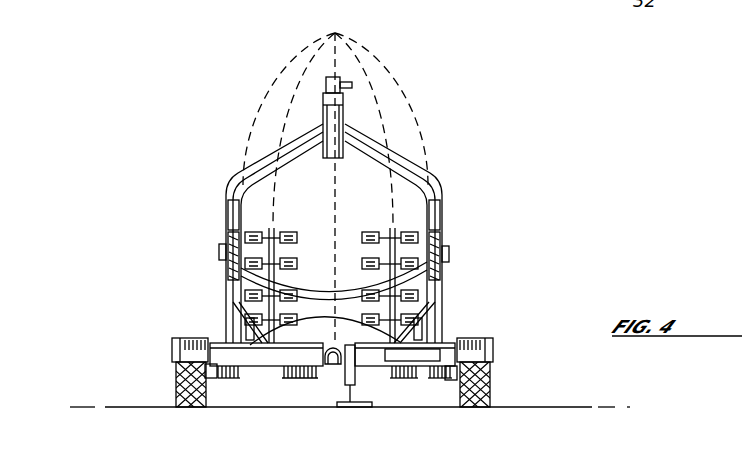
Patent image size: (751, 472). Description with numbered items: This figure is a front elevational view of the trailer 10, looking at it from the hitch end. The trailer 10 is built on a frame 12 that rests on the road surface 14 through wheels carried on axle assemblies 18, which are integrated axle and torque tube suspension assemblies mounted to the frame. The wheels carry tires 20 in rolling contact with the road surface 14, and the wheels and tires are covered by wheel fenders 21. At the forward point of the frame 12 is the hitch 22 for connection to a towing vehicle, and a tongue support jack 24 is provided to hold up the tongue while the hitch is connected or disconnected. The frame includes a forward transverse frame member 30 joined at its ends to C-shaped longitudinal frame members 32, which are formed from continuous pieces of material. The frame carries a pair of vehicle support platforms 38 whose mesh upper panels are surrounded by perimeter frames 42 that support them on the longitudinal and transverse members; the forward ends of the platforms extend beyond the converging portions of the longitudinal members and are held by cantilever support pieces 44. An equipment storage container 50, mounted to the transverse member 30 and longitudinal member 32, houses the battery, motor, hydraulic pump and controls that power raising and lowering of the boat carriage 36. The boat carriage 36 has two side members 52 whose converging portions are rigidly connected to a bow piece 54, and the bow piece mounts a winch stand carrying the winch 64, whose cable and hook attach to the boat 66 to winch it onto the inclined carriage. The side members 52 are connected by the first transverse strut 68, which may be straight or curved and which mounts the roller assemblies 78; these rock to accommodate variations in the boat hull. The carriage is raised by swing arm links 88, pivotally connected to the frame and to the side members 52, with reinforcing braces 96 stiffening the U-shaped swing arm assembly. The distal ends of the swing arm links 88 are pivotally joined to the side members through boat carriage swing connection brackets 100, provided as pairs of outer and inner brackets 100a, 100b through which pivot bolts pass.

The trailer 10 is at (518, 284).
The frame 12 is at (159, 270).
The road surface 14 is at (112, 407).
The axle assembly 18 is at (213, 377).
The tire 20 is at (176, 385).
The wheel fender 21 is at (174, 340).
The hitch 22 is at (330, 368).
The tongue support jack 24 is at (353, 383).
The forward transverse frame member 30 is at (280, 373).
The longitudinal frame member 32 is at (385, 364).
The boat carriage 36 is at (208, 175).
The vehicle support platform 38 is at (236, 316).
The perimeter frame 42 is at (223, 334).
The cantilever support piece 44 is at (235, 367).
The equipment storage container 50 is at (393, 378).
The side member 52 is at (230, 170).
The bow piece 54 is at (345, 118).
The winch 64 is at (353, 84).
The boat 66 is at (272, 112).
The first transverse strut 68 is at (430, 290).
The roller assembly 78 is at (297, 237).
The swing arm link 88 is at (218, 279).
The reinforcing brace 96 is at (325, 323).
The boat carriage swing connection bracket 100 is at (181, 245).
The outer boat carriage swing connection bracket 100a is at (218, 247).
The inner boat carriage swing connection bracket 100b is at (224, 220).